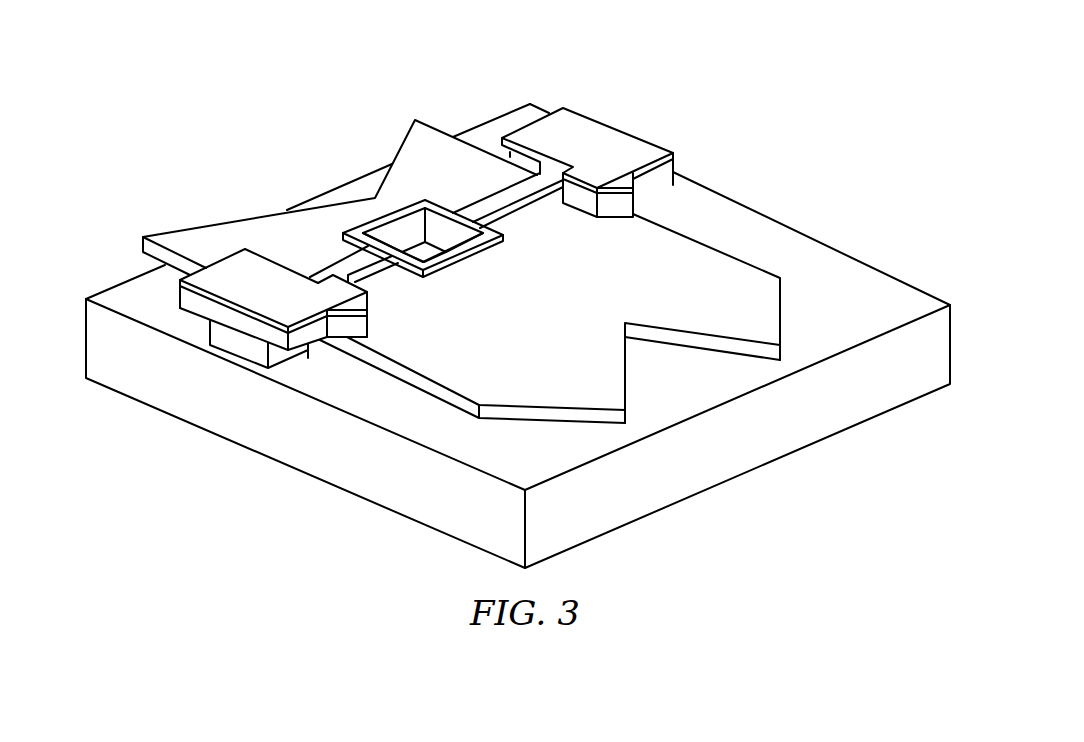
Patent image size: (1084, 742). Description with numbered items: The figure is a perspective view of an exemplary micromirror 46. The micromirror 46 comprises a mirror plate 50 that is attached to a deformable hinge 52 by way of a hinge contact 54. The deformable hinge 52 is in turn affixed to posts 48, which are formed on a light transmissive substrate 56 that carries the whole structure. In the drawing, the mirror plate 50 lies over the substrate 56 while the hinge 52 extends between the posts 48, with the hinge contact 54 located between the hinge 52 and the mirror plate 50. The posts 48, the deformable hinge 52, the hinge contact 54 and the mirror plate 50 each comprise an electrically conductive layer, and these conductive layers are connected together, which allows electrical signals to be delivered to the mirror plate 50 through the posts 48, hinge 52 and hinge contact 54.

The micromirror 46 is at (778, 159).
The post 48 is at (613, 137).
The mirror plate 50 is at (698, 295).
The deformable hinge 52 is at (520, 203).
The hinge contact 54 is at (465, 258).
The light transmissive substrate 56 is at (307, 463).